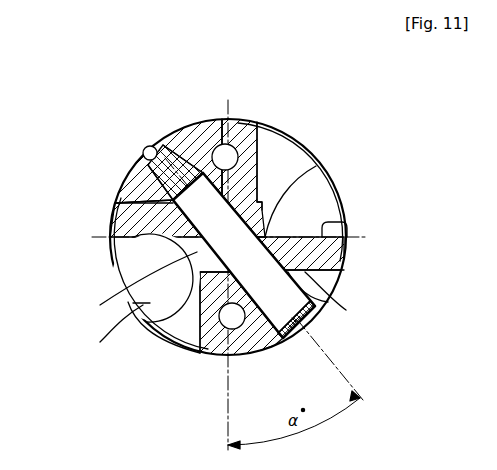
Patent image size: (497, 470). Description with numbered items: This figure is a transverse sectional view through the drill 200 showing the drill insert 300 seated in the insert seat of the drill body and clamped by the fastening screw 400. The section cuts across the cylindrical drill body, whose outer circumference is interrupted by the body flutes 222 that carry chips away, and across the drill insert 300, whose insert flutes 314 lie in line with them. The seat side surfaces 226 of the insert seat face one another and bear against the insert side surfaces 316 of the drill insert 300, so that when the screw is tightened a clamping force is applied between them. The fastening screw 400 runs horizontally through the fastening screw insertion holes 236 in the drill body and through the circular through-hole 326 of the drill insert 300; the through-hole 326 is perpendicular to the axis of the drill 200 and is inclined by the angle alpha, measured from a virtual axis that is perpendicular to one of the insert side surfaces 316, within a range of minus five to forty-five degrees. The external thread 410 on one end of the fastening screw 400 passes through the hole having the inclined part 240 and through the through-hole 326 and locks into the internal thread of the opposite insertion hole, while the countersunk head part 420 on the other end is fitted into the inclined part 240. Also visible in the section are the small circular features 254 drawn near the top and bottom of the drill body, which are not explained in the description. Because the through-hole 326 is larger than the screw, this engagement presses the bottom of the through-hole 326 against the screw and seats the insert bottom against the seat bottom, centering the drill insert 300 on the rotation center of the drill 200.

The drill 200 is at (247, 120).
The body flutes 222 is at (304, 165).
The seat side surfaces 226 is at (352, 254).
The fastening screw insertion holes 236 is at (143, 153).
The inclined part 240 is at (296, 333).
The hole 254 is at (216, 146).
The drill insert 300 is at (111, 222).
The insert flutes 314 is at (330, 216).
The insert side surfaces 316 is at (310, 273).
The through-hole 326 is at (308, 175).
The fastening screw 400 is at (125, 297).
The external thread 410 is at (163, 146).
The head part 420 is at (318, 312).